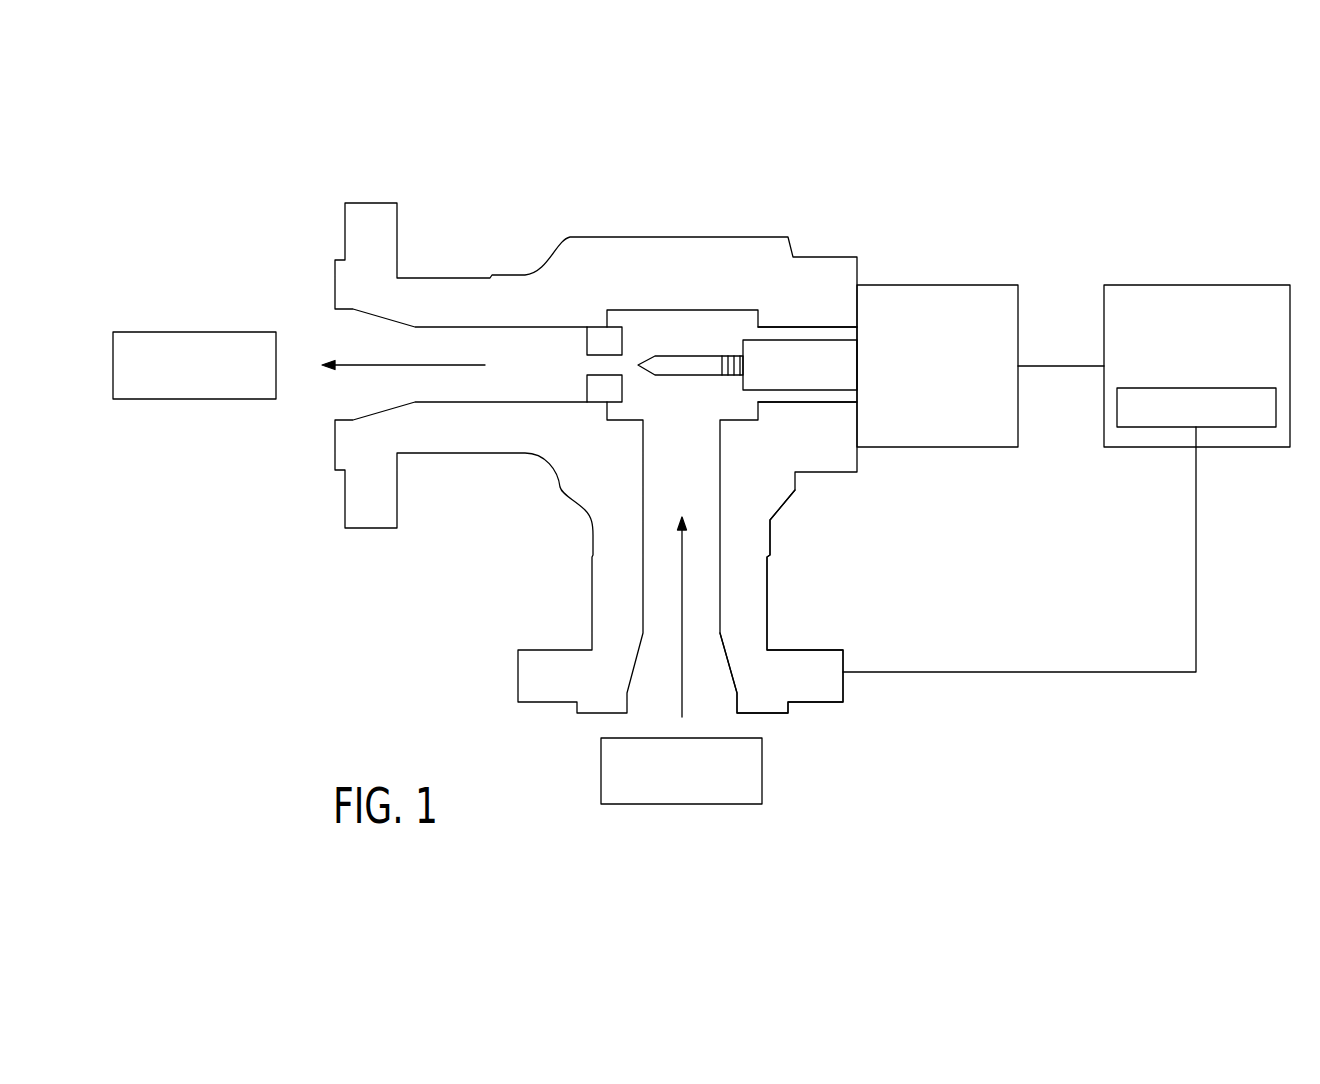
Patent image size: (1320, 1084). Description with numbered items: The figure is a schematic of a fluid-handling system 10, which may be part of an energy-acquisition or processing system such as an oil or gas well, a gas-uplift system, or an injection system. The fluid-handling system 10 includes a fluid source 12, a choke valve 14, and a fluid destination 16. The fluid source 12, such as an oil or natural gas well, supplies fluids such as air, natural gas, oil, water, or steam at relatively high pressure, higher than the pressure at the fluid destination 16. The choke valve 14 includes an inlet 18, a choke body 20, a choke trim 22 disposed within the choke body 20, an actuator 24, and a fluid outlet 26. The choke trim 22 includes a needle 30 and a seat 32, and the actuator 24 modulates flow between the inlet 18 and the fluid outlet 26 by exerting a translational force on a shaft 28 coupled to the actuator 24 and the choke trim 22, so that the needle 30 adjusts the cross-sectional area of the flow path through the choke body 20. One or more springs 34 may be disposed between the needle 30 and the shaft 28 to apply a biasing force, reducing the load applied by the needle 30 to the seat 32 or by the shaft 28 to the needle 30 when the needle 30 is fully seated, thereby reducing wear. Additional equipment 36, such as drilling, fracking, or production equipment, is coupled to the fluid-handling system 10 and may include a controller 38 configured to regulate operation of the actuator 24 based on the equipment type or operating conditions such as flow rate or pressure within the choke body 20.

The fluid-handling system 10 is at (1182, 210).
The fluid source 12 is at (601, 770).
The choke valve 14 is at (799, 547).
The fluid destination 16 is at (193, 331).
The inlet 18 is at (702, 682).
The choke body 20 is at (790, 242).
The choke trim 22 is at (723, 348).
The actuator 24 is at (940, 285).
The fluid outlet 26 is at (322, 333).
The shaft 28 is at (823, 375).
The needle 30 is at (650, 377).
The seat 32 is at (633, 338).
The spring 34 is at (728, 379).
The additional equipment 36 is at (1197, 285).
The controller 38 is at (1197, 388).